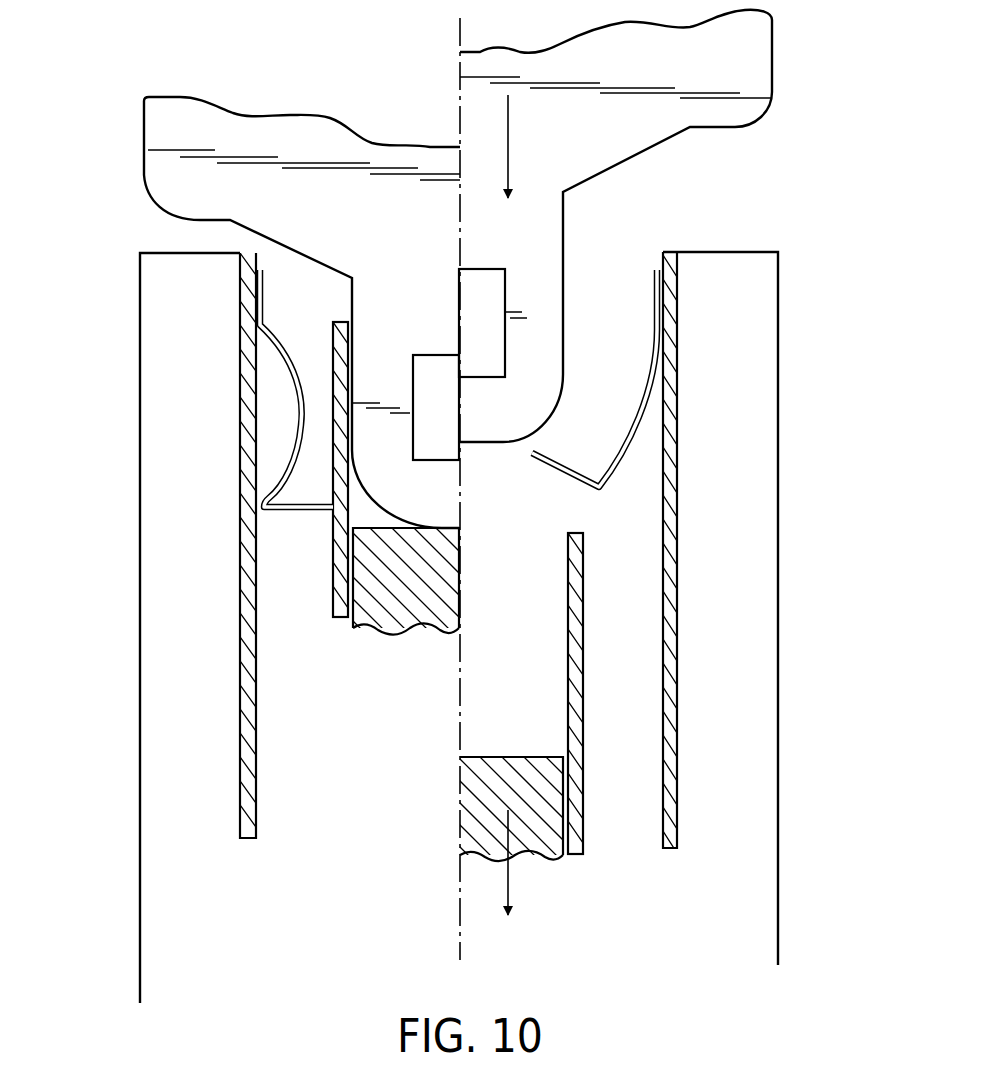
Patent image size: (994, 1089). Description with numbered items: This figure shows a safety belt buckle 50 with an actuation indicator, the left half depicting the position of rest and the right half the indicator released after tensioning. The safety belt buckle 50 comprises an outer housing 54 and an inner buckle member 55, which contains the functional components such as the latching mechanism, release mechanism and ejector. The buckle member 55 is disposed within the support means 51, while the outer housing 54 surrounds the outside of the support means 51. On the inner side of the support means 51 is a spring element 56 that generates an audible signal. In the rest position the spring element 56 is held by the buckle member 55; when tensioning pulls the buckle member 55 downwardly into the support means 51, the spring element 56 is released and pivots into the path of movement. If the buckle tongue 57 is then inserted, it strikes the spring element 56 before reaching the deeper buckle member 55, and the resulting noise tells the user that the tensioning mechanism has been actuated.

The safety belt buckle 50 is at (453, 591).
The support means 51 is at (240, 390).
The outer housing 54 is at (140, 692).
The buckle member 55 is at (333, 542).
The spring element 56 is at (282, 457).
The buckle tongue 57 is at (152, 159).